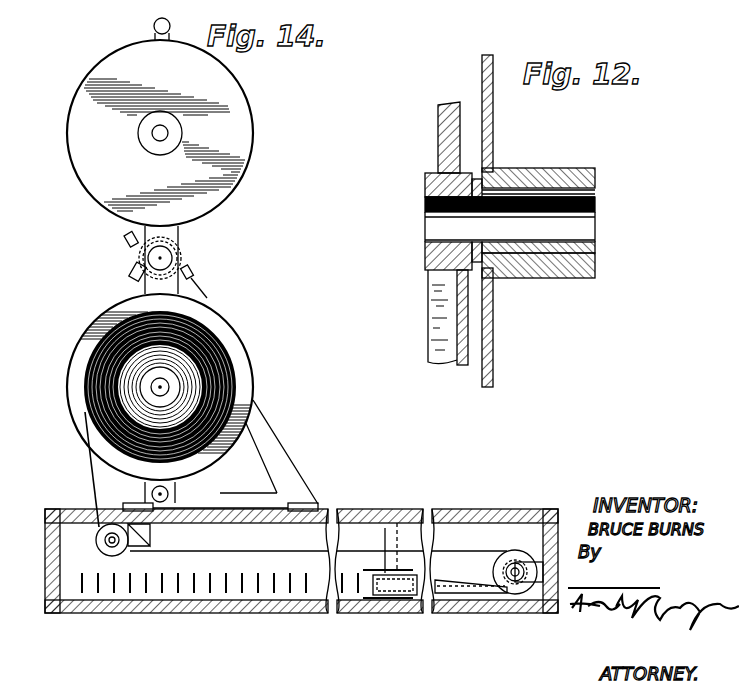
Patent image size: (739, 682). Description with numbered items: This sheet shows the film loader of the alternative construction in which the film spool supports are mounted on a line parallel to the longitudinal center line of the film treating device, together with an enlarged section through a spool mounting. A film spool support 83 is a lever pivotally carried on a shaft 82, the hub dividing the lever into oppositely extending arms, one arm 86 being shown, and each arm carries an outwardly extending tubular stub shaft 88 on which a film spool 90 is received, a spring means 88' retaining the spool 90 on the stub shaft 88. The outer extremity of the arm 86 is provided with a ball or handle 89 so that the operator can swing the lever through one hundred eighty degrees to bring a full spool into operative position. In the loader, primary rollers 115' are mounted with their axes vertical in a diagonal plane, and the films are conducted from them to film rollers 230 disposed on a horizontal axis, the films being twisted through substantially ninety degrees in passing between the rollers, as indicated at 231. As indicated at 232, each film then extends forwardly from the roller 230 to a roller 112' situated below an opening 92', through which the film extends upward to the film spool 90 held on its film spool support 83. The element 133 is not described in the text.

In FIG. 14, the ball or handle 89 is at (153, 25).
In FIG. 14, the film spool 90 is at (241, 115).
In FIG. 12, the film spool 90 is at (487, 130).
In FIG. 14, the tubular stub shaft 88 is at (142, 133).
In FIG. 14, the film spool support 83 is at (189, 247).
In FIG. 14, the shaft 82 is at (157, 259).
In FIG. 14, the belt 133 is at (88, 461).
In FIG. 14, the opening 92' is at (292, 547).
In FIG. 14, the roller 112' is at (76, 540).
In FIG. 14, the primary roller 115' is at (318, 548).
In FIG. 14, the forwardly extended film portion 232 is at (297, 552).
In FIG. 14, the twisted film portion 231 is at (443, 593).
In FIG. 14, the film roller 230 is at (515, 550).
In FIG. 12, the spring means 88' is at (525, 207).
In FIG. 12, the arm 86 is at (442, 297).